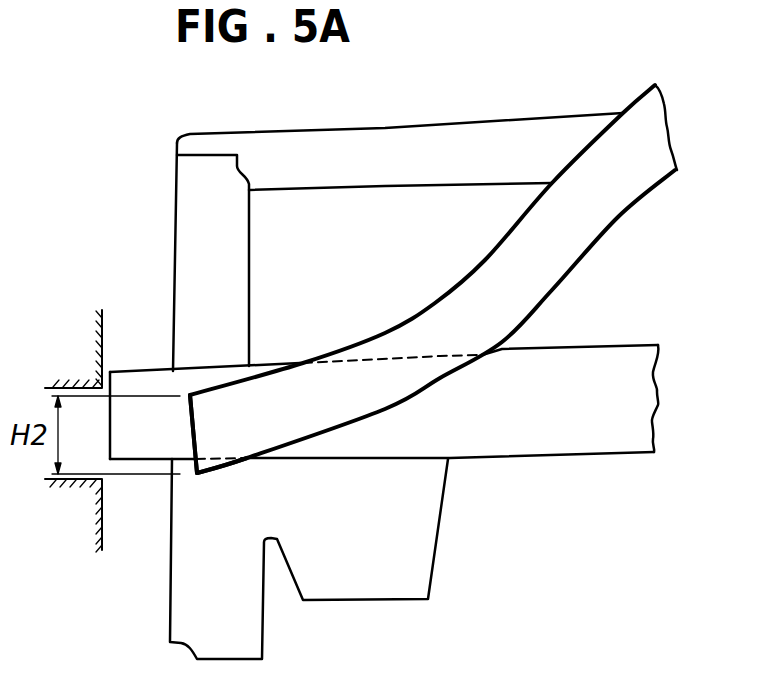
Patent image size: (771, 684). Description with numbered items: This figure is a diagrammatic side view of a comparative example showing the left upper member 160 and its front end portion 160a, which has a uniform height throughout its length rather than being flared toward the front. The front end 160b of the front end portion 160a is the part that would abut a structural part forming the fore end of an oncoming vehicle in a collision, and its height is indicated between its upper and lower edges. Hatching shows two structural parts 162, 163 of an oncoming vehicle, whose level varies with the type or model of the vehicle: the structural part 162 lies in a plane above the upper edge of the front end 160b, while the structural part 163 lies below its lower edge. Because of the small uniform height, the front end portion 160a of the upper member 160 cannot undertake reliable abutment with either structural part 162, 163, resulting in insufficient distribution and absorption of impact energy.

The left upper member 160 is at (433, 305).
The front end portion 160a is at (210, 407).
The front end 160b is at (193, 430).
The structural part 162 is at (103, 337).
The structural part 163 is at (101, 519).